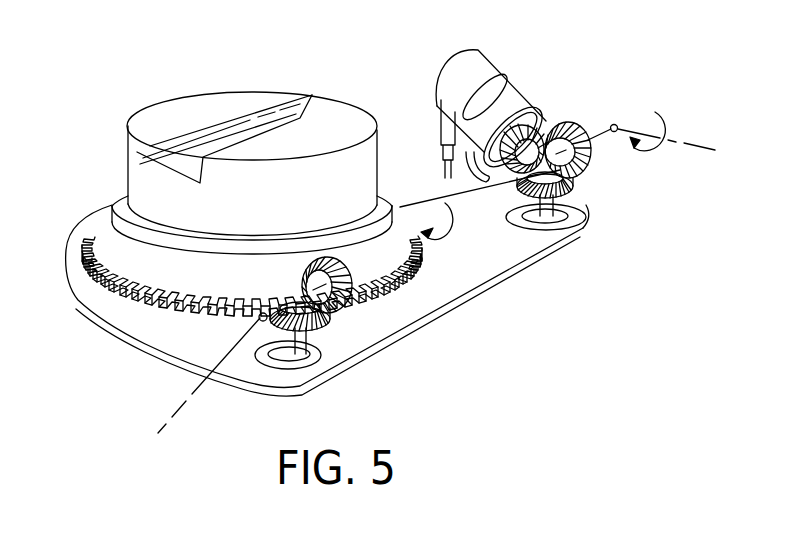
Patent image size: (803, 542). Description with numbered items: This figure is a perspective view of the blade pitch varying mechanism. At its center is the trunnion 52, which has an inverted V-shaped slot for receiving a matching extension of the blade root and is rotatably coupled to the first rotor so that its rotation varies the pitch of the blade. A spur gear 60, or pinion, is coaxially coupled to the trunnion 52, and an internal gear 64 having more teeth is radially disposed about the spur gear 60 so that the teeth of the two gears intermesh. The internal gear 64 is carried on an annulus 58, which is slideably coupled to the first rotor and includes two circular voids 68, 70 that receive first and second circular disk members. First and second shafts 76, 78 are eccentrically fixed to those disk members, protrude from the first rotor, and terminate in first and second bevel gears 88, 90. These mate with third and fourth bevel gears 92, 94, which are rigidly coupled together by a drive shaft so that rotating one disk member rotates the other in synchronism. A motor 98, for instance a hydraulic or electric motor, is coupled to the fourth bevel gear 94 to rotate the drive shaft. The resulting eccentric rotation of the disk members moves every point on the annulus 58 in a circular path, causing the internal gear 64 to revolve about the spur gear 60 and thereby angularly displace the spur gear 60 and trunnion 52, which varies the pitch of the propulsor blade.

The trunnion 52 is at (263, 97).
The annulus 58 is at (460, 287).
The spur gear 60 is at (112, 276).
The internal gear 64 is at (168, 302).
The first circular void 68 is at (260, 362).
The second circular void 70 is at (527, 229).
The first shaft 76 is at (330, 362).
The second shaft 78 is at (558, 214).
The first bevel gear 88 is at (322, 330).
The second bevel gear 90 is at (572, 186).
The third bevel gear 92 is at (343, 300).
The fourth bevel gear 94 is at (572, 140).
The motor 98 is at (505, 59).